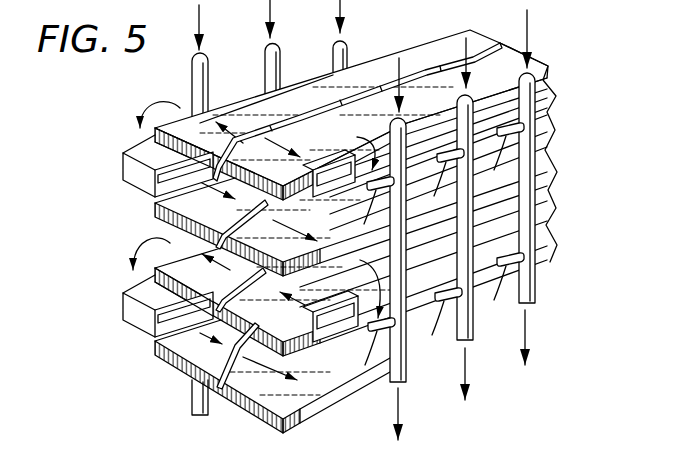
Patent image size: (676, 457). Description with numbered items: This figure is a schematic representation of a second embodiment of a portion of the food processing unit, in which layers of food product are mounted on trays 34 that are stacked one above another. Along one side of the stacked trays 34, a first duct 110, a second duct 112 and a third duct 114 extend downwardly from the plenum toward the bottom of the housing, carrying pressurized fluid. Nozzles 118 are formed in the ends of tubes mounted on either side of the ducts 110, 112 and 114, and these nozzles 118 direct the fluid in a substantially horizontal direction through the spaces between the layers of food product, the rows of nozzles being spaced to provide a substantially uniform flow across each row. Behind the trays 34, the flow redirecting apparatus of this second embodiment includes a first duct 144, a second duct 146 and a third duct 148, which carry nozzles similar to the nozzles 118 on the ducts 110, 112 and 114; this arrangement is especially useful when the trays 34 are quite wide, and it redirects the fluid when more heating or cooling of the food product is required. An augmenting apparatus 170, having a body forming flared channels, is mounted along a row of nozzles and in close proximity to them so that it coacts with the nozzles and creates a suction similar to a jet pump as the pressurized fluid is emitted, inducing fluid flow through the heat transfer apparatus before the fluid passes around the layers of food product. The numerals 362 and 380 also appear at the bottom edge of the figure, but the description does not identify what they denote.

The trays 34 is at (168, 147).
The first duct 110 is at (531, 305).
The second duct 112 is at (472, 335).
The third duct 114 is at (391, 378).
The nozzles 118 is at (380, 190).
The first duct 144 is at (348, 44).
The second duct 146 is at (281, 57).
The third duct 148 is at (208, 73).
The augmenting apparatus 170 is at (128, 165).
The base member 362 is at (508, 454).
The base member 380 is at (213, 453).